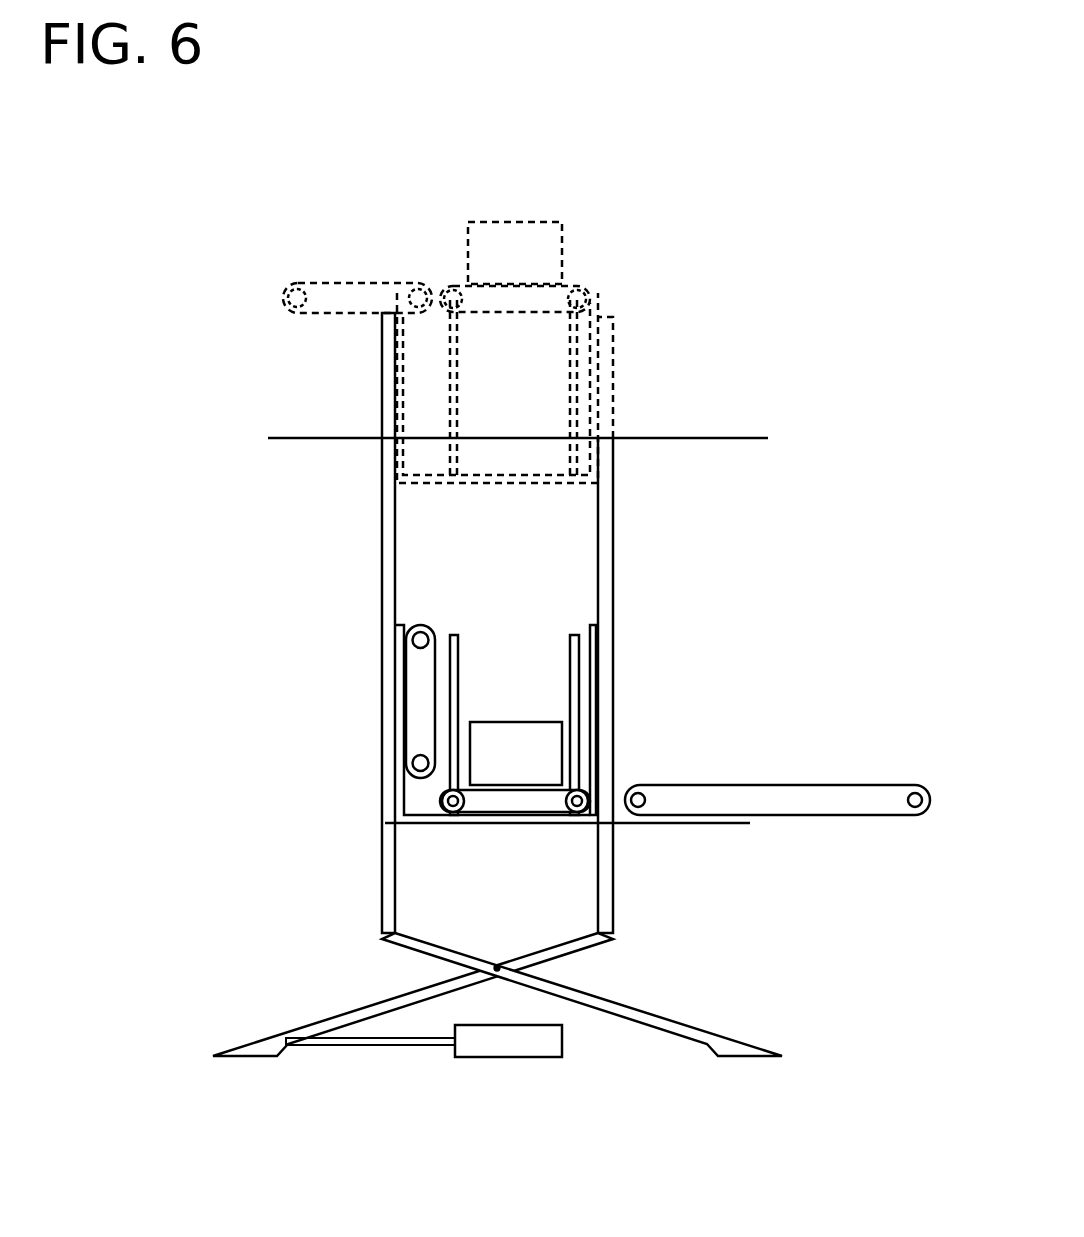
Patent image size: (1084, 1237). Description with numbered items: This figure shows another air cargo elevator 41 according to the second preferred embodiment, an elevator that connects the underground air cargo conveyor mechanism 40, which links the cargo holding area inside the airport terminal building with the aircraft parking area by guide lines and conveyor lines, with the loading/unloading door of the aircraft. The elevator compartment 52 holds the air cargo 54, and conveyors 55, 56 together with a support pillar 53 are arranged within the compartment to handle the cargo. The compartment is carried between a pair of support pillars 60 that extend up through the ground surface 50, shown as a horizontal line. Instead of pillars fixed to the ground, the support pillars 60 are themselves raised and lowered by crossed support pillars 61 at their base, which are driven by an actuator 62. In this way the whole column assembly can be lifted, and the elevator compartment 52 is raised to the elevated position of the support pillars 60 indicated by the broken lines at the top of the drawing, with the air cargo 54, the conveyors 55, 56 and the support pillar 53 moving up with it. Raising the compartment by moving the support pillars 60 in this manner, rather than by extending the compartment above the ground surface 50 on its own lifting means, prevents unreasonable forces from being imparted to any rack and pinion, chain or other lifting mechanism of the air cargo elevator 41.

The underground air cargo conveyor mechanism 40 is at (802, 803).
The air cargo elevator 41 is at (350, 572).
The ground surface 50 is at (690, 437).
The elevator compartment 52 is at (598, 300).
The support pillar 53 is at (455, 407).
The air cargo 54 is at (518, 236).
The conveyor 55 is at (563, 290).
The conveyor 56 is at (344, 284).
The support pillar 60 is at (387, 512).
The support pillar 61 is at (370, 1010).
The actuator 62 is at (520, 1048).